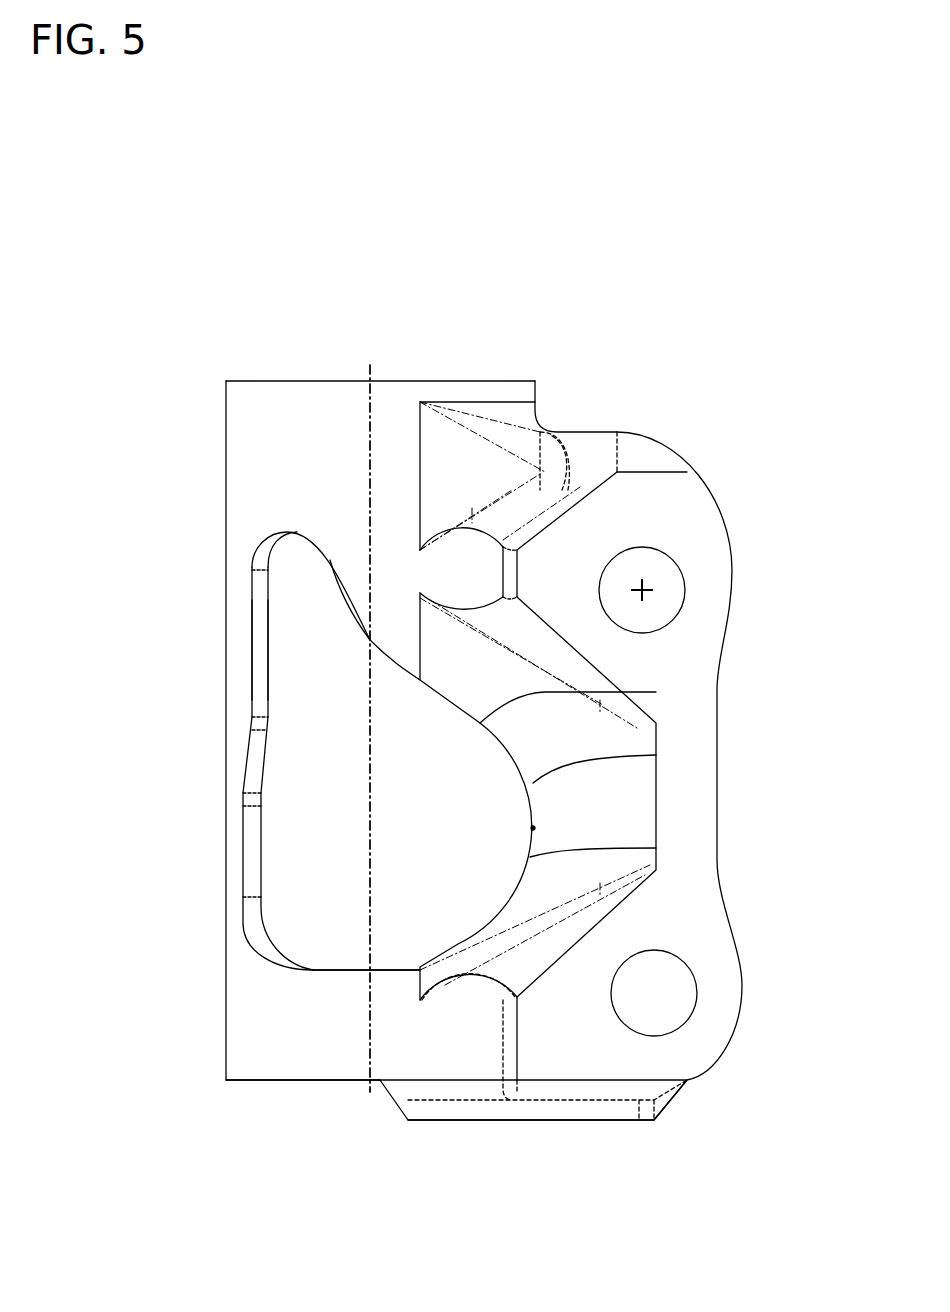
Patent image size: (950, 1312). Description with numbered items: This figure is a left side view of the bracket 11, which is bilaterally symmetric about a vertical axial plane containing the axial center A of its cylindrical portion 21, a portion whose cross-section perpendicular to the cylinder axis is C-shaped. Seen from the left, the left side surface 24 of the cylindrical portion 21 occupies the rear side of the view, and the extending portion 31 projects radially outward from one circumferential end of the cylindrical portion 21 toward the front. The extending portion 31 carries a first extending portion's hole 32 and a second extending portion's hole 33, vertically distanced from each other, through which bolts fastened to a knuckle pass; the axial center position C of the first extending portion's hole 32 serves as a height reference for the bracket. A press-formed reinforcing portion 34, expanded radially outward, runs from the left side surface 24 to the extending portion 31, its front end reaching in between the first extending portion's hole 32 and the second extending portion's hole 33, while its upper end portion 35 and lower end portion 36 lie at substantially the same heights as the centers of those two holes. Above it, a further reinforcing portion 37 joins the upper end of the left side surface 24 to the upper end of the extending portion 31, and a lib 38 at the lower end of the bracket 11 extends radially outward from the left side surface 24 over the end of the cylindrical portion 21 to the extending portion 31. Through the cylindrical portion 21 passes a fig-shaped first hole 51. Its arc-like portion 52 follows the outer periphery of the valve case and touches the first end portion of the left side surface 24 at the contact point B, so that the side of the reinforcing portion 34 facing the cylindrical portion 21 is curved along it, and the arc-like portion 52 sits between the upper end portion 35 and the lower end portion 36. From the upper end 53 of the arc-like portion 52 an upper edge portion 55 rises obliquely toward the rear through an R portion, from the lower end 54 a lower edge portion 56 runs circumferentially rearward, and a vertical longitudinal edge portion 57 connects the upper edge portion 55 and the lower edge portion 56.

The bracket 11 is at (265, 305).
The cylindrical portion 21 is at (237, 380).
The left side surface 24 is at (272, 1062).
The extending portion 31 is at (687, 495).
The first extending portion's hole 32 is at (685, 590).
The second extending portion's hole 33 is at (697, 990).
The reinforcing portion 34 is at (618, 780).
The upper end portion 35 is at (430, 643).
The lower end portion 36 is at (483, 955).
The reinforcing portion 37 is at (455, 447).
The lib 38 is at (590, 1112).
The first hole 51 is at (257, 945).
The arc-like portion 52 is at (656, 755).
The upper end 53 is at (656, 692).
The lower end 54 is at (656, 848).
The upper edge portion 55 is at (337, 563).
The lower edge portion 56 is at (345, 973).
The longitudinal edge portion 57 is at (258, 645).
The axial center A is at (370, 368).
The contact point B is at (533, 828).
The axial center position C is at (643, 590).